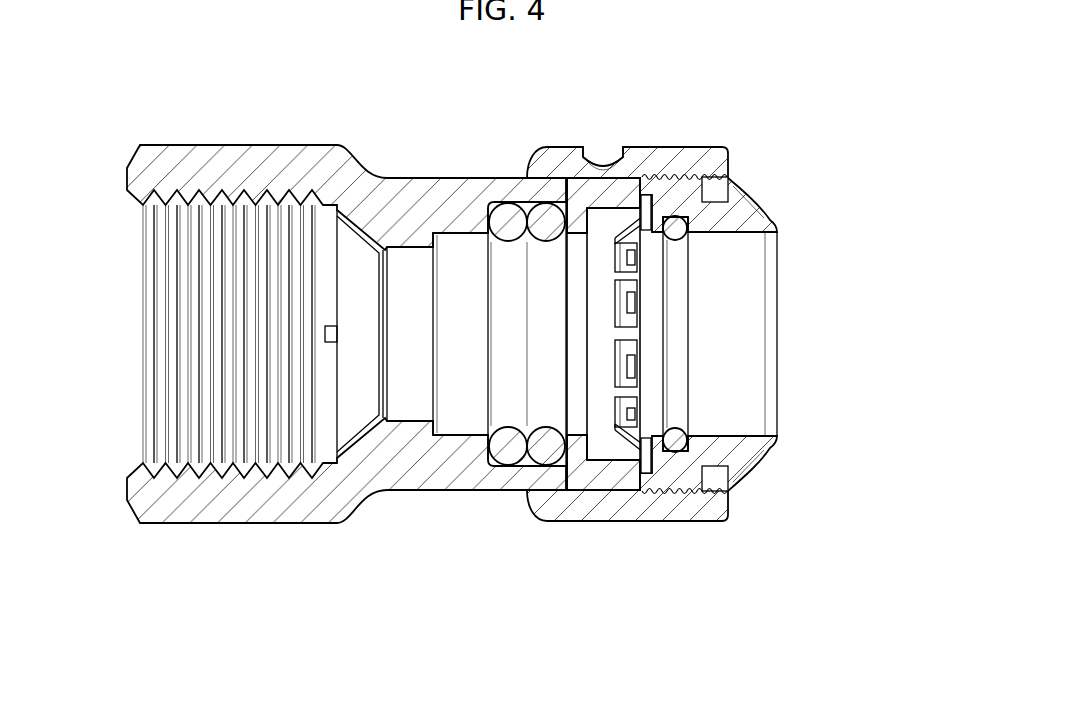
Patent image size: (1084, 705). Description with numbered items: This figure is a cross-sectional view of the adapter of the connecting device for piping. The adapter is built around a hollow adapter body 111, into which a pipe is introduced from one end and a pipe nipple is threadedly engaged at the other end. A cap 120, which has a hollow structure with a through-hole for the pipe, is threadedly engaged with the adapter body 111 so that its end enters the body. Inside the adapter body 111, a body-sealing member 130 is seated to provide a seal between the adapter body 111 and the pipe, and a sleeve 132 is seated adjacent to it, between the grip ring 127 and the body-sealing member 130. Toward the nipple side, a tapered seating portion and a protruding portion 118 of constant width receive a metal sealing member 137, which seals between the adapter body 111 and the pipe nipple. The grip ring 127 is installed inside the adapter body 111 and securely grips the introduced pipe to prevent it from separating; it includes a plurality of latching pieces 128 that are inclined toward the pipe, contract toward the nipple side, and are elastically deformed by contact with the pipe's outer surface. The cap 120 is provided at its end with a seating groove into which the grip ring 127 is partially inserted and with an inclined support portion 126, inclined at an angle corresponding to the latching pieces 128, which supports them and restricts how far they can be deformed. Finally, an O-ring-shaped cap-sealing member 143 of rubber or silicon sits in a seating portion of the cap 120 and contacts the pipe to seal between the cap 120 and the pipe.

The adapter body 111 is at (455, 492).
The metal sealing member 137 is at (372, 216).
The body-sealing member 130 is at (543, 220).
The protruding portion 118 is at (606, 163).
The cap-sealing member 143 is at (677, 217).
The cap 120 is at (803, 184).
The sleeve 132 is at (574, 500).
The inclined support portion 126 is at (690, 490).
The grip ring 127 is at (618, 463).
The latching pieces 128 is at (626, 460).